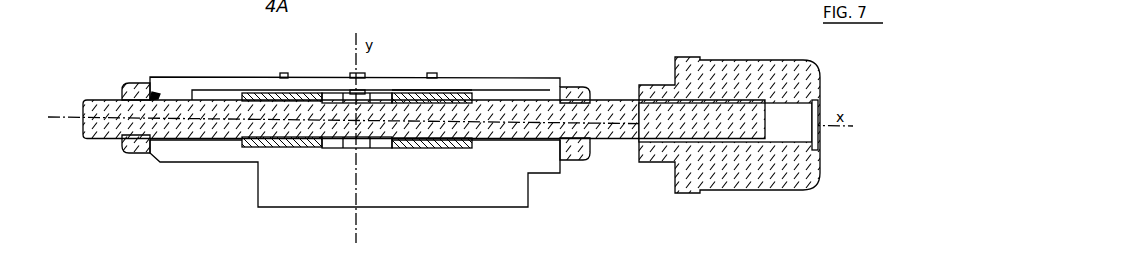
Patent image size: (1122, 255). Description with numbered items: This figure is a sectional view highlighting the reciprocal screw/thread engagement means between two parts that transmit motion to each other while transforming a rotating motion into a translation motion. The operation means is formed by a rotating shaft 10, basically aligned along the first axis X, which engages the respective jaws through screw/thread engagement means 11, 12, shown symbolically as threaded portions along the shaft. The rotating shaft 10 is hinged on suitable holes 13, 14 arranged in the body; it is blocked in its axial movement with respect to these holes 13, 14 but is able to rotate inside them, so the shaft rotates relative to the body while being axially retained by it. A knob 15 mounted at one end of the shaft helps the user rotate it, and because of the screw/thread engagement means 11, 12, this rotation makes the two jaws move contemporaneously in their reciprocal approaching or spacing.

The rotating shaft 10 is at (600, 113).
The screw/thread engagement means 11 is at (278, 100).
The screw/thread engagement means 12 is at (430, 99).
The hole 13 is at (557, 100).
The hole 14 is at (152, 98).
The knob 15 is at (707, 87).